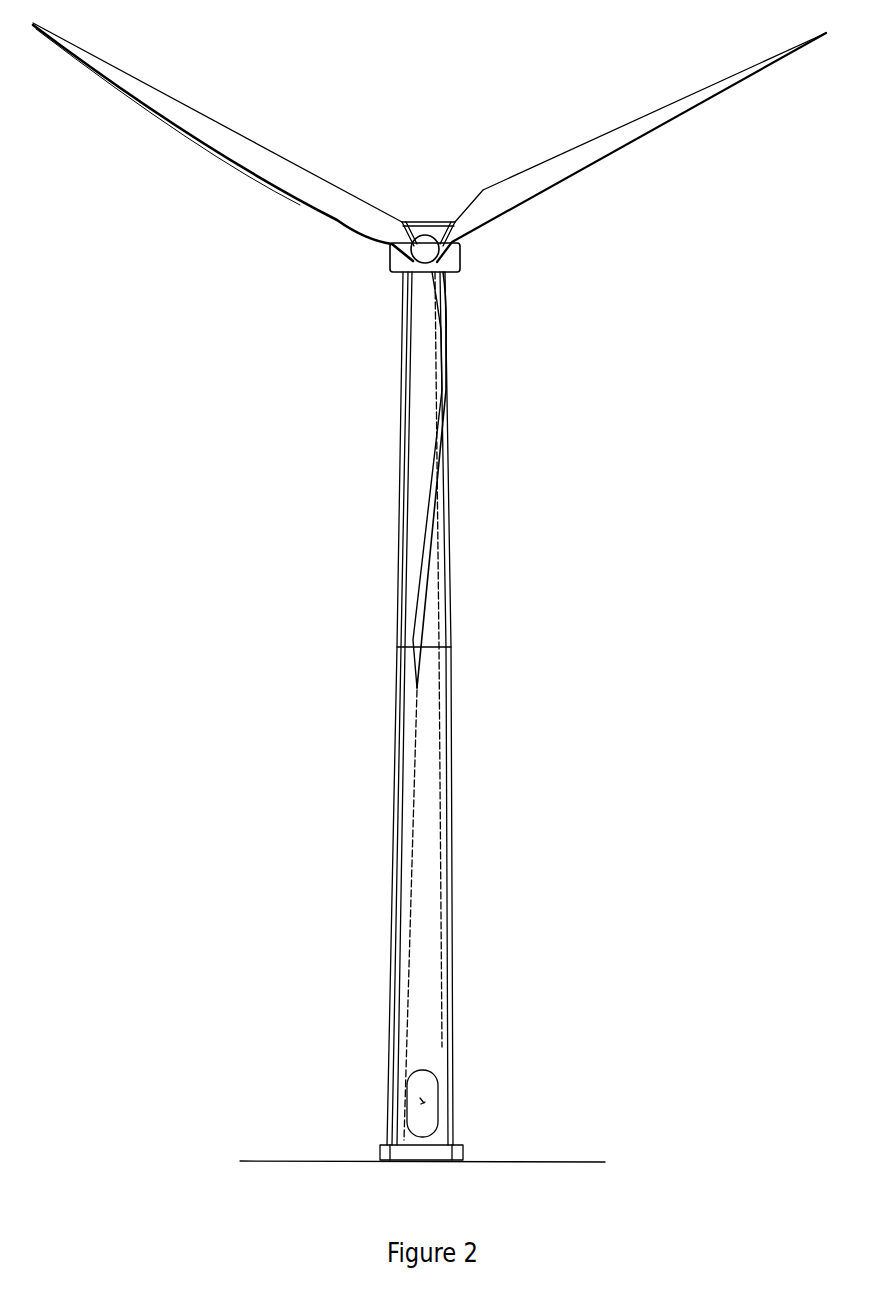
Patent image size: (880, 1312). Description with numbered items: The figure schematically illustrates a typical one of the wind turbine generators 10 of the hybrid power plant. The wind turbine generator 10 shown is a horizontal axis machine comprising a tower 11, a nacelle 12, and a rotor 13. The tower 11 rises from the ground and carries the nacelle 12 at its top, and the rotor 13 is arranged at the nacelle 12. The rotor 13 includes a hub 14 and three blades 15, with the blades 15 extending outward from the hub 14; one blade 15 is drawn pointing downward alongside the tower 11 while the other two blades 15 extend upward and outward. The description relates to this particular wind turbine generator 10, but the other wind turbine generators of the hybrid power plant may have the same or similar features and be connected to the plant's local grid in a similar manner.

The wind turbine generator 10 is at (288, 505).
The tower 11 is at (448, 794).
The nacelle 12 is at (460, 266).
The rotor 13 is at (360, 253).
The hub 14 is at (427, 248).
The blades 15 is at (200, 138).